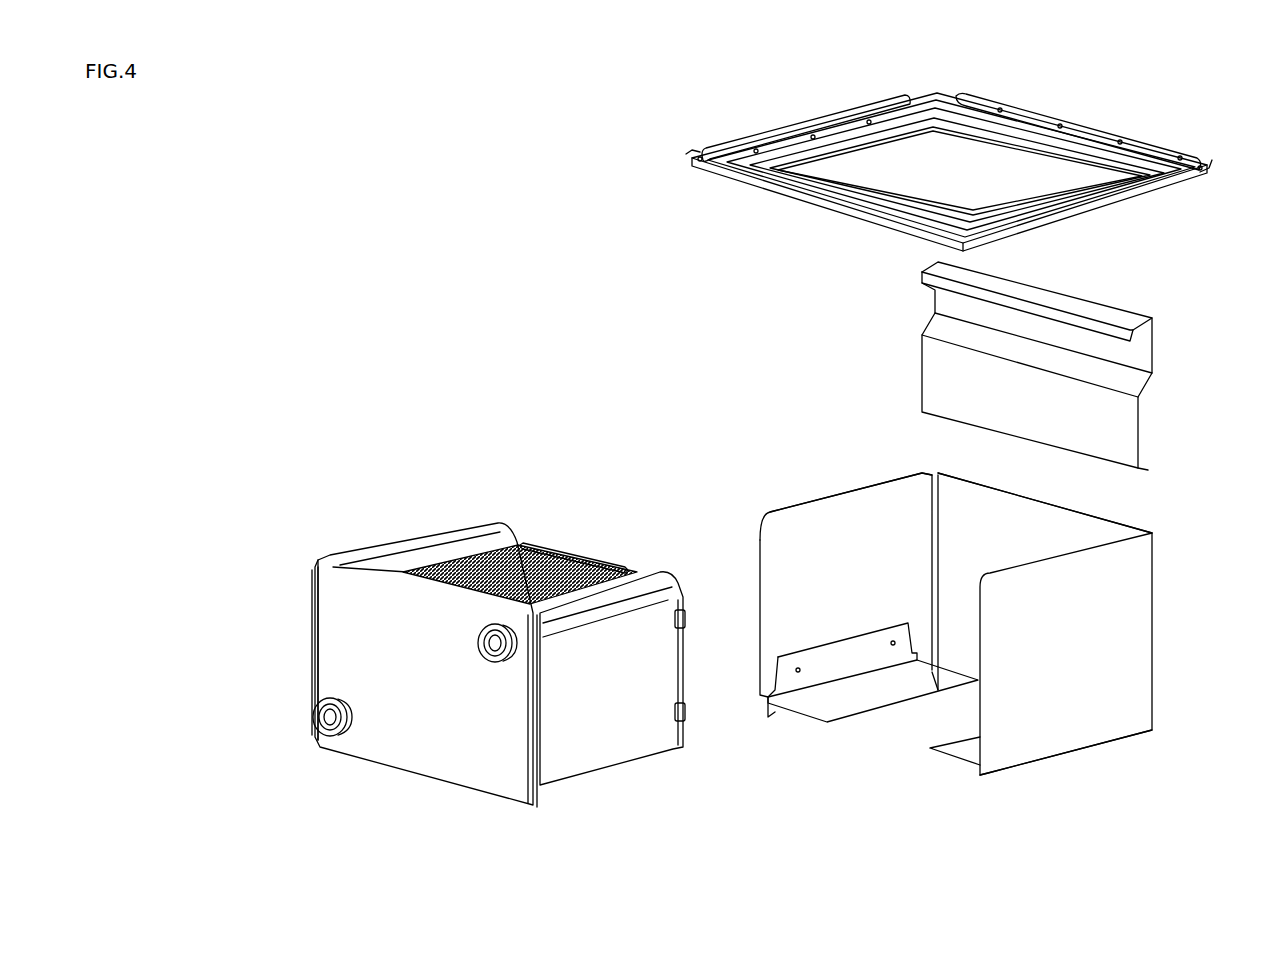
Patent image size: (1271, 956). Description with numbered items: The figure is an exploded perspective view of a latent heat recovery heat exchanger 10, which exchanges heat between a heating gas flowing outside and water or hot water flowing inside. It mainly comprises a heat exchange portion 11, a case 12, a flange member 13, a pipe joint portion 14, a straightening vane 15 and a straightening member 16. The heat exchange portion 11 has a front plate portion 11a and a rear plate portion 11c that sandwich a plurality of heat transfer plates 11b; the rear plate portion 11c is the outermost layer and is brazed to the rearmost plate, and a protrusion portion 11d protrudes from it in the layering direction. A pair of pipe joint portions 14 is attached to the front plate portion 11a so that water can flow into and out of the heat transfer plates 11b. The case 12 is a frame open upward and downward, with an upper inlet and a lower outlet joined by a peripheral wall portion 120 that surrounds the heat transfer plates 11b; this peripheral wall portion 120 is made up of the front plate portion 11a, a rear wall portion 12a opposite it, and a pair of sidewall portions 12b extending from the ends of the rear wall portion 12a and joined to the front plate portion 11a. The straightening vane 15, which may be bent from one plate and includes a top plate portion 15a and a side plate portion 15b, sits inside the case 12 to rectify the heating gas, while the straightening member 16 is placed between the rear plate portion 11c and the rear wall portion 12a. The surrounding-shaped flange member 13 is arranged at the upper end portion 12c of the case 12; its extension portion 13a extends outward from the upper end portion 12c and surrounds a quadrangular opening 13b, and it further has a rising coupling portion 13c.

The latent heat recovery heat exchanger 10 is at (1232, 120).
The heat exchange portion 11 is at (340, 597).
The front plate portion 11a is at (340, 636).
The heat transfer plates 11b is at (548, 570).
The rear plate portion 11c is at (593, 560).
The protrusion portion 11d is at (686, 714).
The case 12 is at (1138, 608).
The rear wall portion 12a is at (1007, 540).
The sidewall portions 12b is at (790, 603).
The upper end portion 12c is at (873, 487).
The peripheral wall portion 120 is at (1075, 718).
The flange member 13 is at (1072, 132).
The extension portion 13a is at (792, 132).
The opening 13b is at (798, 160).
The rising coupling portion 13c is at (838, 147).
The pipe joint portion 14 is at (322, 717).
The straightening vane 15 is at (417, 550).
The top plate portion 15a is at (463, 538).
The side plate portion 15b is at (660, 674).
The straightening member 16 is at (1070, 305).